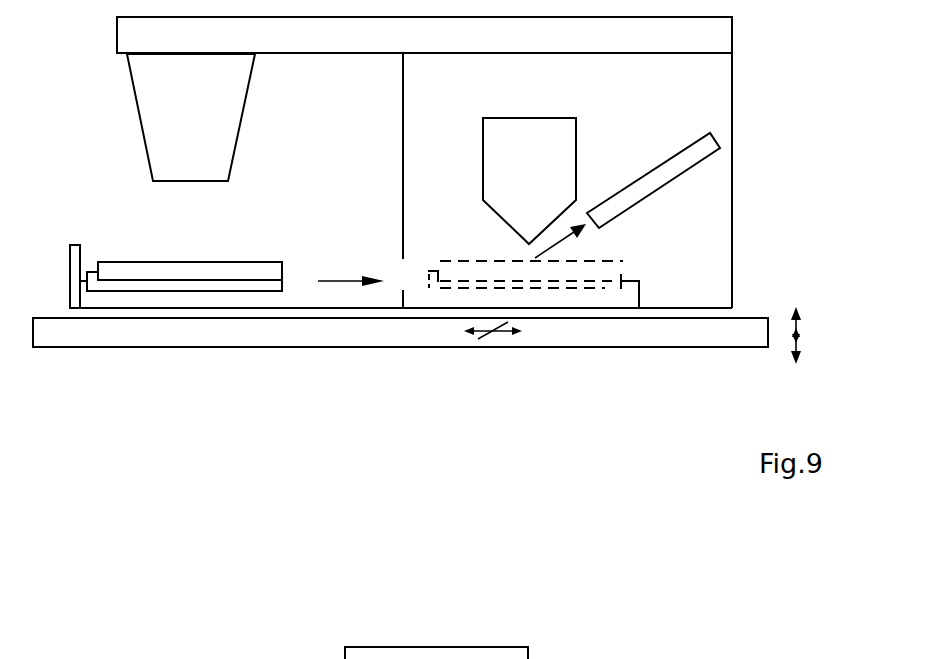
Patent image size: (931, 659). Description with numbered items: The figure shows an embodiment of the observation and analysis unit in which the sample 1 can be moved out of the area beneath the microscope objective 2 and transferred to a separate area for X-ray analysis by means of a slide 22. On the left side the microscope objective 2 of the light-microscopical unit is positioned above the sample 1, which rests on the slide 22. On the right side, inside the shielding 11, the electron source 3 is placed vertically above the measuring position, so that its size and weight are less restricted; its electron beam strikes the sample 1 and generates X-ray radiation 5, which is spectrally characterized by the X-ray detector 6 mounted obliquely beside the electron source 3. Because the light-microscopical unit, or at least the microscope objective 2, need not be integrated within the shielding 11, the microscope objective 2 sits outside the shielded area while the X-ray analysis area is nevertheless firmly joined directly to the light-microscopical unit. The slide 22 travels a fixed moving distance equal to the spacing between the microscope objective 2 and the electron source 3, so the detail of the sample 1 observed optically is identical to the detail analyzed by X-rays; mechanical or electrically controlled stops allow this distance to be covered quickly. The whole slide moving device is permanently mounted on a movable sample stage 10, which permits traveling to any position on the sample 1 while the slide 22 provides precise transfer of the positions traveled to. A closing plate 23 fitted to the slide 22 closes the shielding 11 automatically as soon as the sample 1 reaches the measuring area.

The sample 1 is at (257, 265).
The microscope objective 2 is at (143, 100).
The electron source 3 is at (566, 140).
The X-ray radiation 5 is at (560, 247).
The X-ray detector 6 is at (710, 145).
The sample stage 10 is at (308, 338).
The shielding 11 is at (732, 220).
The slide 22 is at (158, 302).
The closing plate 23 is at (73, 268).